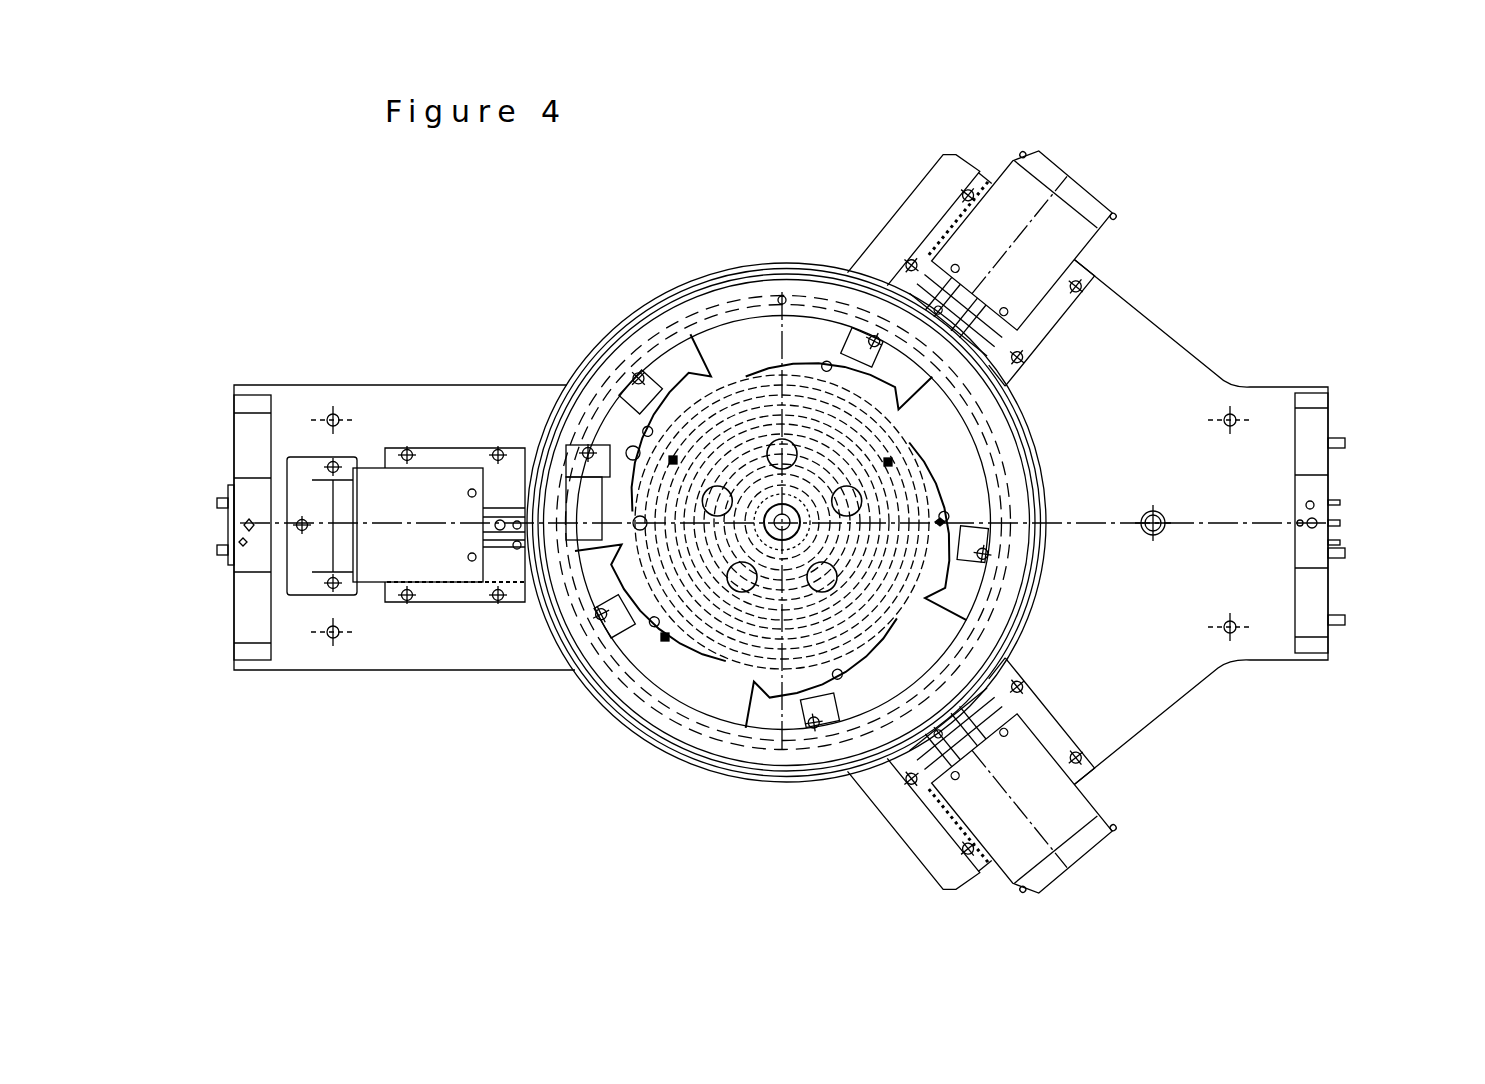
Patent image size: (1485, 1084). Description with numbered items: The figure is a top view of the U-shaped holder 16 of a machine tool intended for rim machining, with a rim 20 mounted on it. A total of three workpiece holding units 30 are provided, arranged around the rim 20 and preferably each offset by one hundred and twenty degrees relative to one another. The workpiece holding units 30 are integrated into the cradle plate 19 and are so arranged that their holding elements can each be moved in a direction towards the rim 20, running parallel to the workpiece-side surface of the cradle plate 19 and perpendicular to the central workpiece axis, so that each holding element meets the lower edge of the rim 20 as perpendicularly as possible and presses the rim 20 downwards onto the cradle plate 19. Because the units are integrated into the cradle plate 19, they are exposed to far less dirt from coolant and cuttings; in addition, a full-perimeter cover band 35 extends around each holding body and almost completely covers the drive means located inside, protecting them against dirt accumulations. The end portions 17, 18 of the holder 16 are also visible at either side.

The U-shaped holder 16 is at (1254, 274).
The left end flange 17 is at (253, 610).
The right end flange 18 is at (1308, 603).
The cradle plate 19 is at (415, 650).
The rim 20 is at (695, 280).
The workpiece holding unit 30 is at (470, 592).
The cover band 35 is at (1050, 172).